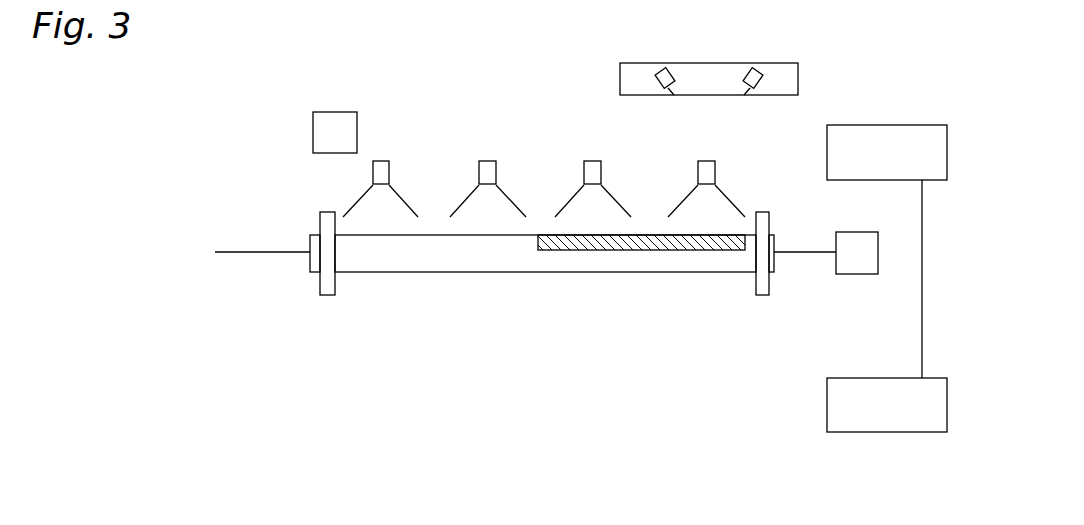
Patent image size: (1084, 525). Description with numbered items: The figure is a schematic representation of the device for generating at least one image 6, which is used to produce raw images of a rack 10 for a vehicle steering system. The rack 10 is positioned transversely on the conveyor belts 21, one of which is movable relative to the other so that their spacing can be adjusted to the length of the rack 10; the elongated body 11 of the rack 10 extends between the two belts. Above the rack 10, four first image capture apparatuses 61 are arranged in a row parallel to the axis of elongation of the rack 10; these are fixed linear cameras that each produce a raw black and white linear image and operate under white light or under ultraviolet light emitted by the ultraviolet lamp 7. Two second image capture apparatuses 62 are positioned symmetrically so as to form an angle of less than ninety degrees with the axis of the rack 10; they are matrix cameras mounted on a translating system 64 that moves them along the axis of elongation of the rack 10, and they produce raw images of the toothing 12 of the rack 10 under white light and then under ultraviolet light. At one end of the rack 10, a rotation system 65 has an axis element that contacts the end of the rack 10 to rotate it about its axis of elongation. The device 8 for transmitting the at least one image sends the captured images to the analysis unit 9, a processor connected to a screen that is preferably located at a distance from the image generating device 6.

The device for generating at least one image 6 is at (231, 158).
The ultraviolet lamp 7 is at (340, 128).
The device for transmitting the at least one image 8 is at (887, 152).
The analysis unit 9 is at (887, 405).
The rack 10 is at (402, 280).
The roller body 11 is at (462, 258).
The toothing 12 is at (617, 252).
The conveyor belt 21 is at (326, 288).
The first image capture apparatus 61 is at (380, 168).
The second image capture apparatus 62 is at (660, 68).
The translating system 64 is at (782, 78).
The rotation system 65 is at (858, 262).